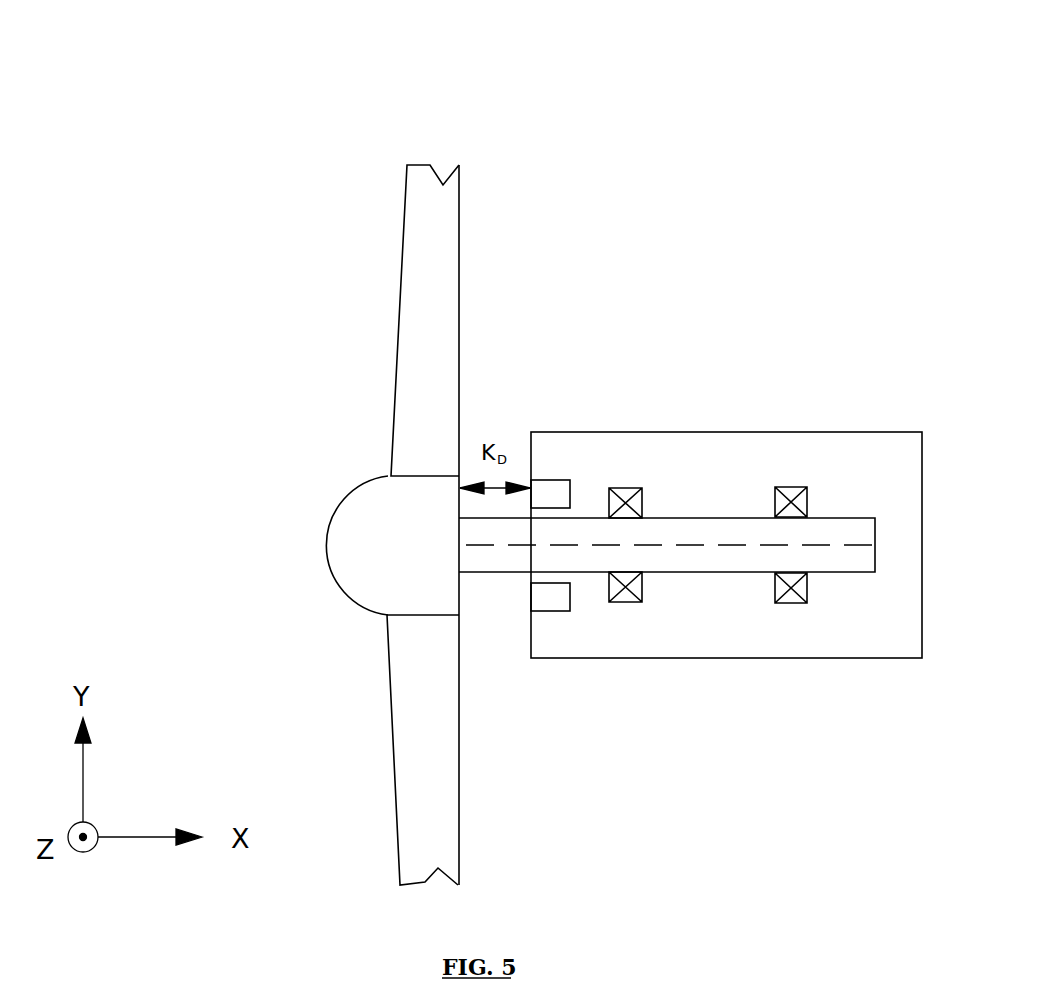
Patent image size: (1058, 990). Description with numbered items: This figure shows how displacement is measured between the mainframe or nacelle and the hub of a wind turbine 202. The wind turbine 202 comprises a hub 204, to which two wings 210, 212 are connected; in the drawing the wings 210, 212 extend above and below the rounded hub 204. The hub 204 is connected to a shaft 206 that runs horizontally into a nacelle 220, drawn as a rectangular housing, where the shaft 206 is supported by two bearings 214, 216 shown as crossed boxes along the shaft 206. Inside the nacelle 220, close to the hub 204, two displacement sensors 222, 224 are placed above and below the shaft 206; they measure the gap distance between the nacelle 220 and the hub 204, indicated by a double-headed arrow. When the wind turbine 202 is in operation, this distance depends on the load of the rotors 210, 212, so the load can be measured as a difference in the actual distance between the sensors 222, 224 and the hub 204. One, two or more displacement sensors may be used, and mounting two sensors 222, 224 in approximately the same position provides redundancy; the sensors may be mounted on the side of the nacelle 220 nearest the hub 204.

The wind turbine 202 is at (610, 102).
The hub 204 is at (338, 580).
The shaft 206 is at (492, 573).
The wing 210 is at (425, 320).
The wing 212 is at (423, 750).
The bearing 214 is at (620, 603).
The bearing 216 is at (787, 605).
The nacelle 220 is at (660, 657).
The displacement sensor 222 is at (570, 478).
The displacement sensor 224 is at (568, 582).